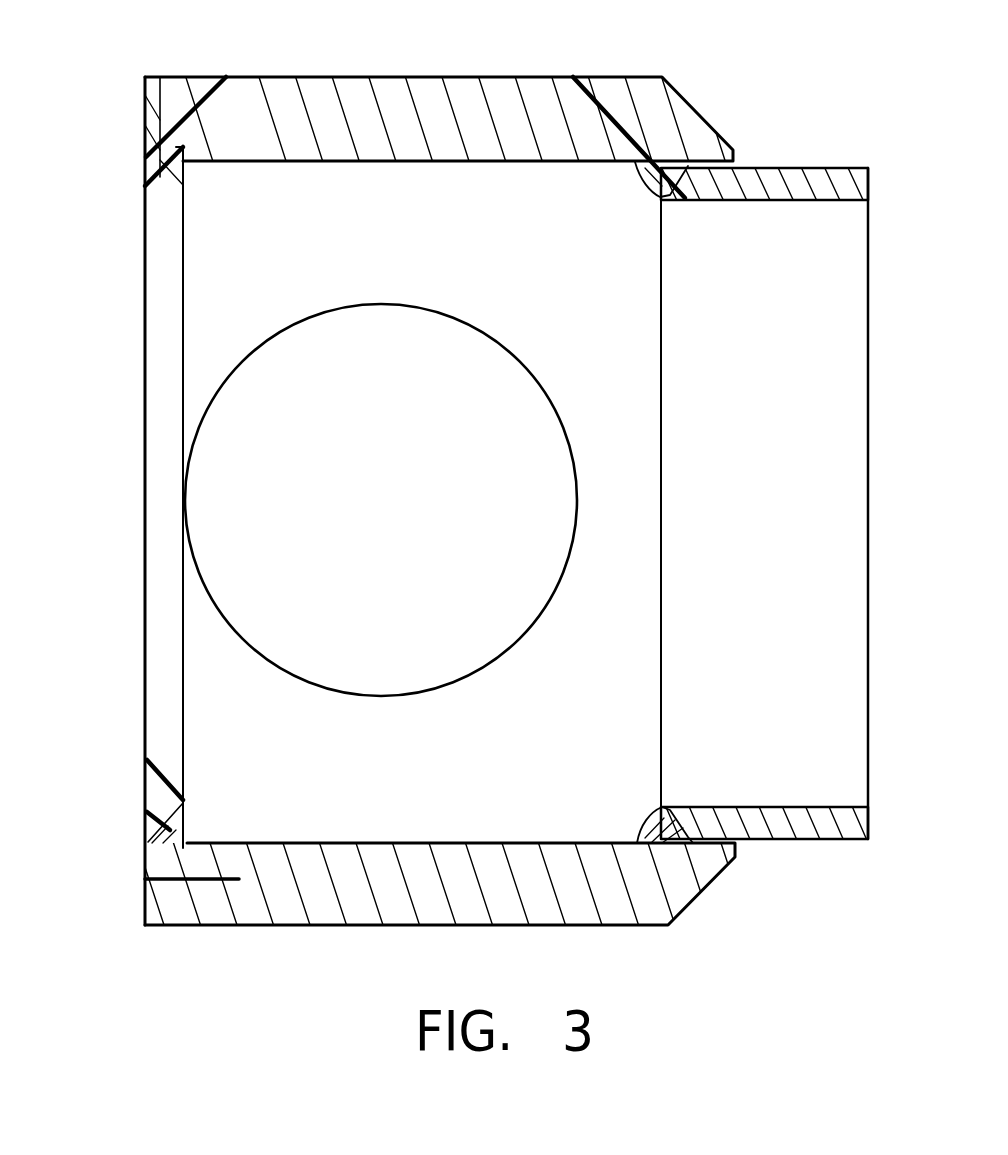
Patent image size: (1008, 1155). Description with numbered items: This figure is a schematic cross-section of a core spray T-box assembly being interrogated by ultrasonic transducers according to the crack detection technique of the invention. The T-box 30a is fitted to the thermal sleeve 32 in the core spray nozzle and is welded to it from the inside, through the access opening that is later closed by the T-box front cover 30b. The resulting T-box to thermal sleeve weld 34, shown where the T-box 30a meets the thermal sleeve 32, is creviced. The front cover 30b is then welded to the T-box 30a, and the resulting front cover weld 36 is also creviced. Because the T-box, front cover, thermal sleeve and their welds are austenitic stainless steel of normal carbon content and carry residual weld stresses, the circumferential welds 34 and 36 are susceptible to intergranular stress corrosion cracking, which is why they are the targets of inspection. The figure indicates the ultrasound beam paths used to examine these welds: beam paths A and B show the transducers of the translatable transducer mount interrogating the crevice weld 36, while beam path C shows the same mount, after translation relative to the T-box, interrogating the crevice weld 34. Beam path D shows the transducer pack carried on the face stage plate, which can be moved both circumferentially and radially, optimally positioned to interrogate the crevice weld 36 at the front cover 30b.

The T-box 30a is at (355, 90).
The T-box front cover 30b is at (157, 468).
The thermal sleeve 32 is at (815, 178).
The T-box to thermal sleeve weld 34 is at (647, 830).
The front cover weld 36 is at (150, 853).
The ultrasound beam path A is at (158, 113).
The ultrasound beam path B is at (204, 85).
The ultrasound beam path C is at (630, 132).
The ultrasound beam path D is at (172, 808).